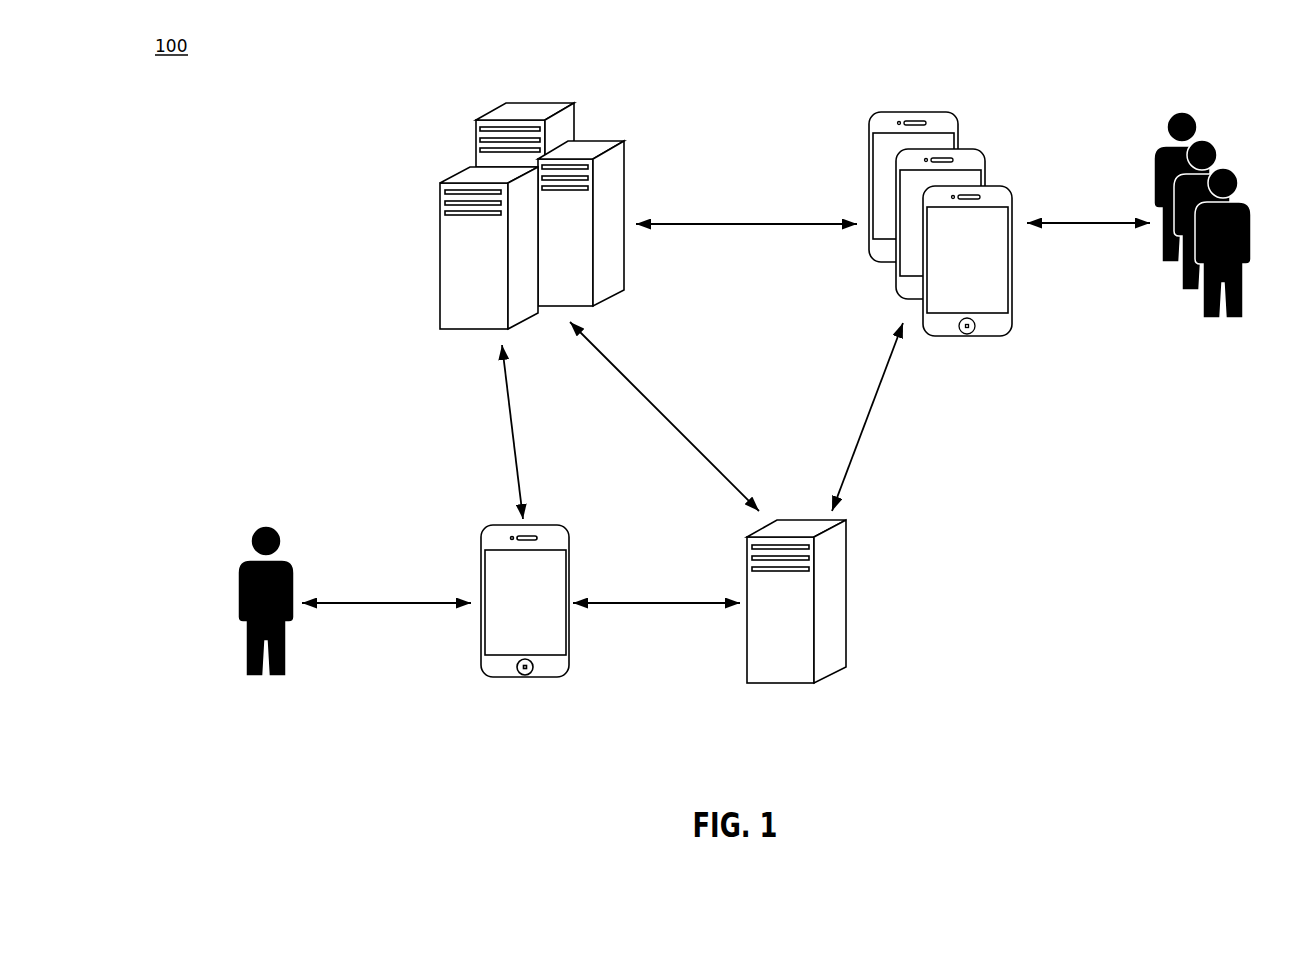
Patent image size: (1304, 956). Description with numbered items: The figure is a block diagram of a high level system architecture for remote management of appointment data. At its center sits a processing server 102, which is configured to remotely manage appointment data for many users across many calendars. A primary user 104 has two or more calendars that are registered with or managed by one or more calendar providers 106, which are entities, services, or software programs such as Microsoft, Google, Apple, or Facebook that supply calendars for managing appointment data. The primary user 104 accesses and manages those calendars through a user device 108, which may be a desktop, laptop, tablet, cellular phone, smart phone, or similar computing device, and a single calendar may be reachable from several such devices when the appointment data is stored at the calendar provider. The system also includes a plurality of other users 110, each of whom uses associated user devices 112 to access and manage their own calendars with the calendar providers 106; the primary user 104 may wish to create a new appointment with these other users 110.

The processing server 102 is at (847, 566).
The primary user 104 is at (255, 528).
The calendar providers 106 is at (437, 215).
The user devices 108 is at (481, 555).
The other users 110 is at (1233, 318).
The user devices 112 is at (998, 337).